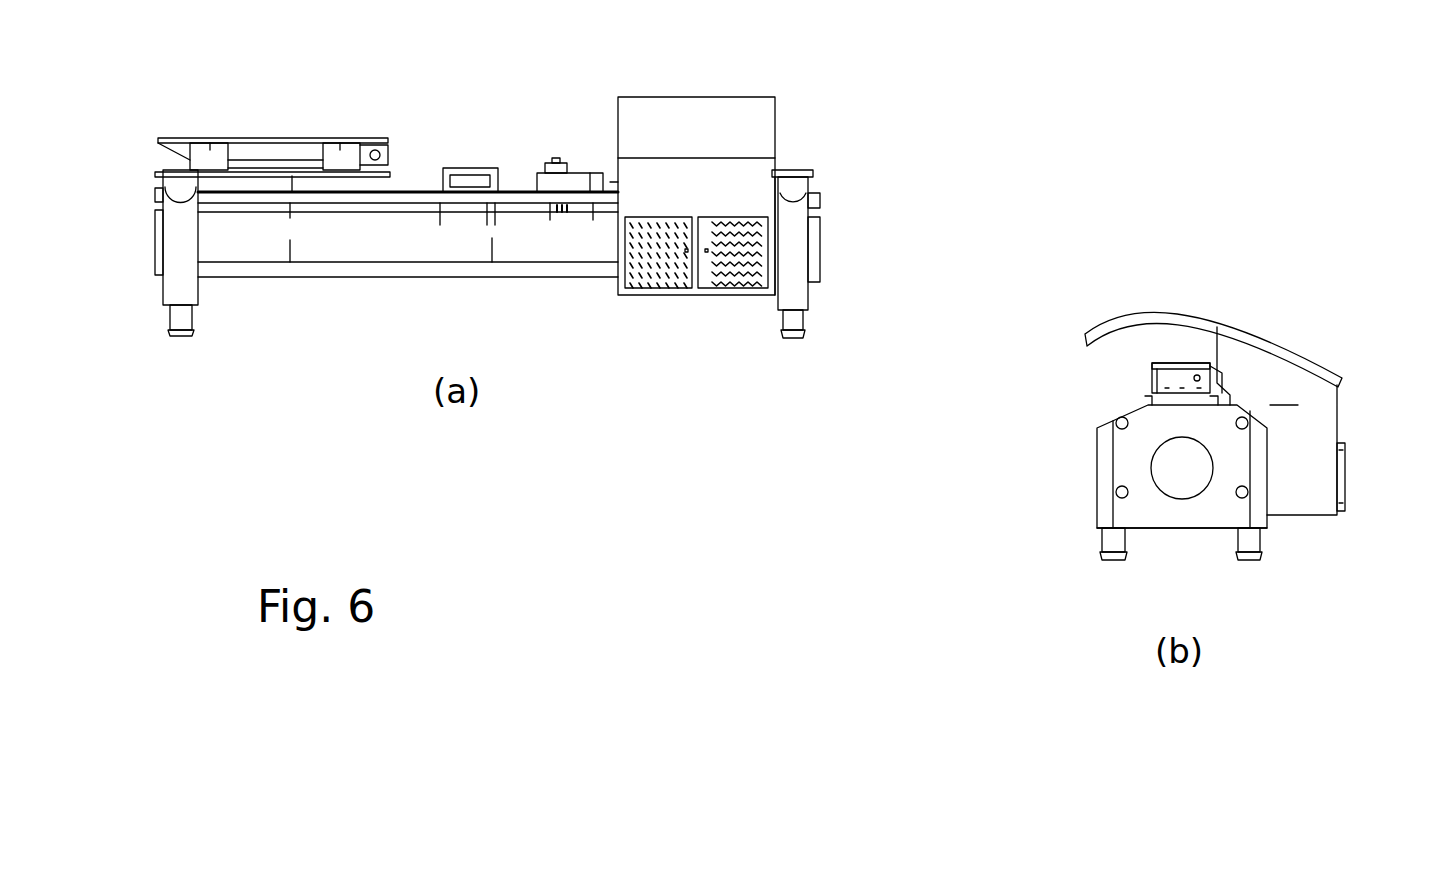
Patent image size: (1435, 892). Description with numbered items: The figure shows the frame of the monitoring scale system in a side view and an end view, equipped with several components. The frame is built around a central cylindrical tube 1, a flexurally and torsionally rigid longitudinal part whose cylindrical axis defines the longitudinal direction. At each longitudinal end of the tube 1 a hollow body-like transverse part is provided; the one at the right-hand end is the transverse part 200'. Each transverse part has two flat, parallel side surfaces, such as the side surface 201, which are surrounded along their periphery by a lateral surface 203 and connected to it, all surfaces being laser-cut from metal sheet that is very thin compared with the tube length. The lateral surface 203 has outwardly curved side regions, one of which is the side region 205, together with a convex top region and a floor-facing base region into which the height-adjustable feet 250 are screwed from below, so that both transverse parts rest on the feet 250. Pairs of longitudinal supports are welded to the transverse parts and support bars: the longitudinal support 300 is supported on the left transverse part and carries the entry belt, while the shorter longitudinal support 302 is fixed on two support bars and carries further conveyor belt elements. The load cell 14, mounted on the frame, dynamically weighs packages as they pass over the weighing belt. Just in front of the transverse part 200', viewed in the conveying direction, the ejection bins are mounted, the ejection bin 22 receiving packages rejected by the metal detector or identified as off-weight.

The central cylindrical tube 1 is at (362, 242).
The load cell 14 is at (576, 158).
The ejection bin 22 is at (728, 280).
The hollow body-like transverse part 200' is at (835, 254).
The side surface 201 is at (1150, 517).
The lateral surface 203 is at (180, 237).
The side region 205 is at (792, 252).
The height-adjustable feet 250 is at (1103, 533).
The longitudinal support 300 is at (163, 167).
The shorter longitudinal support 302 is at (469, 165).